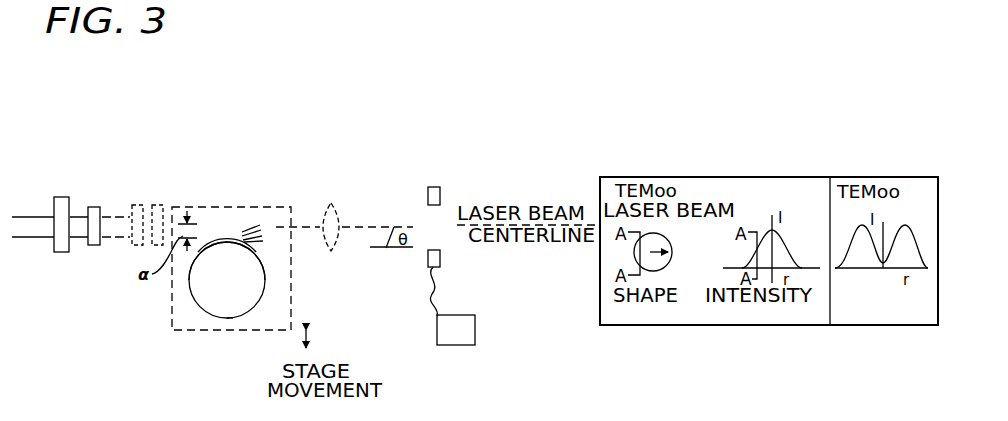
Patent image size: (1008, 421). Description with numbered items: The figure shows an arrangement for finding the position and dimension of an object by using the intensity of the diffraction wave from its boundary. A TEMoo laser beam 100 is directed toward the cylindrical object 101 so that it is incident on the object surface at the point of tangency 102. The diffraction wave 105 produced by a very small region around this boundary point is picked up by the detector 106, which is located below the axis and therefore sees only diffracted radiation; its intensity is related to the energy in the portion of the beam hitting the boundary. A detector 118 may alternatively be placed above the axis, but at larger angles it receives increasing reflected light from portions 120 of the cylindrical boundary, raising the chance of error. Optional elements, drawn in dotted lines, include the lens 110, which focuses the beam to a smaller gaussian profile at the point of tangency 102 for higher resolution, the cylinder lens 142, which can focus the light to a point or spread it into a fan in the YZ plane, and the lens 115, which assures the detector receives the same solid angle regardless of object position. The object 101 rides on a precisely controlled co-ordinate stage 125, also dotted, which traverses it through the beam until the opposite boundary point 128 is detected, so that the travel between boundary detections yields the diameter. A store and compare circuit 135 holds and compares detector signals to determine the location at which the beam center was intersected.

The laser beam 100 is at (55, 198).
The cylinder lens 142 is at (133, 206).
The lens 110 is at (157, 216).
The point of tangency 102 is at (221, 242).
The diffraction wave 105 is at (249, 224).
The lens 115 is at (337, 208).
The detector 118 is at (440, 193).
The detector 106 is at (440, 257).
The portions of the cylindrical boundary 120 is at (212, 243).
The object 101 is at (245, 299).
The co-ordinate stage 125 is at (292, 300).
The opposite object boundary point 128 is at (233, 319).
The store and compare circuit 135 is at (437, 335).